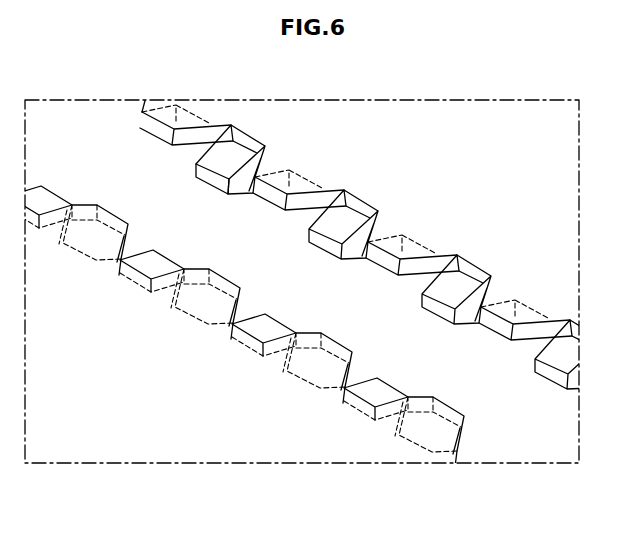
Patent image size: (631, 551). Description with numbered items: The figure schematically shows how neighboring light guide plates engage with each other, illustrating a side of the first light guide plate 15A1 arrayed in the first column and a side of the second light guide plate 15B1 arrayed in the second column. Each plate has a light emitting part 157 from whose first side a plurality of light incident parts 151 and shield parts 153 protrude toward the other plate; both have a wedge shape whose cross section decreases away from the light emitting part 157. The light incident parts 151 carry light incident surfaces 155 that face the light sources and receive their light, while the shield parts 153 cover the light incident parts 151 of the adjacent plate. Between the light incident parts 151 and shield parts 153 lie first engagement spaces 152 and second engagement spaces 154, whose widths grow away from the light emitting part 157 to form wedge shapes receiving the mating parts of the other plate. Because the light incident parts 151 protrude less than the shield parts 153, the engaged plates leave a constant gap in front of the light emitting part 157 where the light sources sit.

The first light guide plate 15A1 is at (152, 451).
The second light guide plate 15B1 is at (563, 152).
The light incident parts 151 is at (238, 196).
The first engagement spaces 152 is at (298, 206).
The shield parts 153 is at (278, 213).
The second engagement spaces 154 is at (346, 222).
The light incident surfaces 155 is at (243, 152).
The light emitting part 157 is at (562, 251).